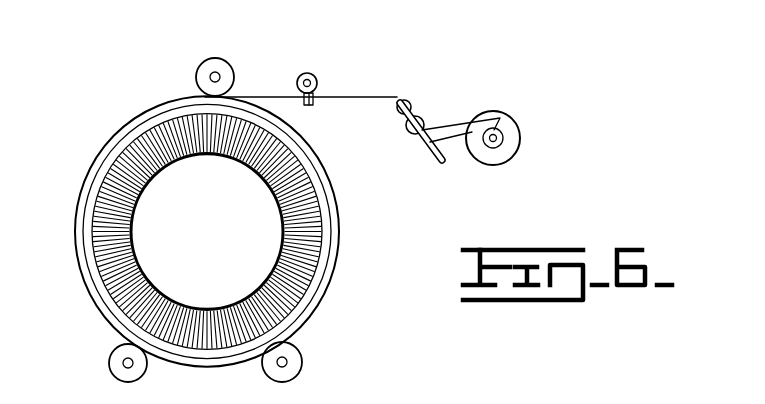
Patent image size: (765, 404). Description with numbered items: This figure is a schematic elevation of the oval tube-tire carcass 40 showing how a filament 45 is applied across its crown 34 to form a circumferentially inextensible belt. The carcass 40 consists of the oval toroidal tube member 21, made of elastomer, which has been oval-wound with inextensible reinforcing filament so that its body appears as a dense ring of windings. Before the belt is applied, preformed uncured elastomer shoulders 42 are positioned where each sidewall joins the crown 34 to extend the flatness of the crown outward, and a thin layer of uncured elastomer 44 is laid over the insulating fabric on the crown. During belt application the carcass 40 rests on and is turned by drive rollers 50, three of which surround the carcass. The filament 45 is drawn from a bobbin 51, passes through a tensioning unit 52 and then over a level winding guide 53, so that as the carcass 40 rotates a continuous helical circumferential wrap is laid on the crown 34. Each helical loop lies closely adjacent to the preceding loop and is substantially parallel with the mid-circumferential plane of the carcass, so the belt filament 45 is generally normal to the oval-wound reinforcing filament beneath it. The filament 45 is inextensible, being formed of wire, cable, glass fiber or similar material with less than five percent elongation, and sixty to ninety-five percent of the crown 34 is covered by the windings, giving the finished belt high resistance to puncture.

The toroidal tube member 21 is at (135, 203).
The crown 34 is at (214, 231).
The tube-tire carcass 40 is at (280, 242).
The elastomer shoulders 42 is at (326, 194).
The layer of uncured elastomer 44 is at (337, 225).
The filament 45 is at (327, 96).
The guide rollers 50 is at (222, 59).
The bobbin 51 is at (518, 122).
The tensioning unit 52 is at (413, 134).
The level winding guide 53 is at (307, 105).